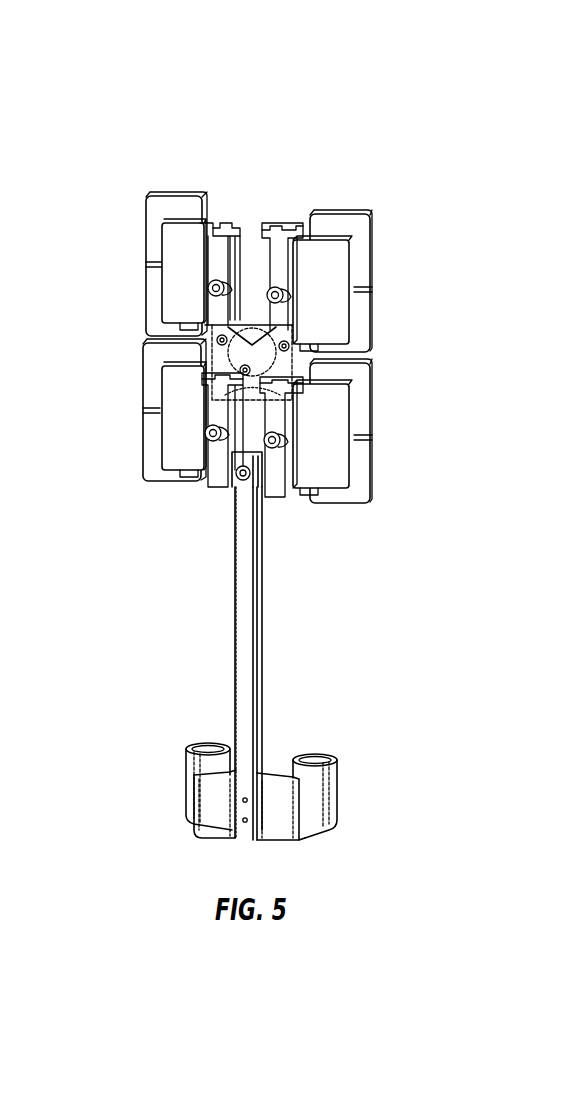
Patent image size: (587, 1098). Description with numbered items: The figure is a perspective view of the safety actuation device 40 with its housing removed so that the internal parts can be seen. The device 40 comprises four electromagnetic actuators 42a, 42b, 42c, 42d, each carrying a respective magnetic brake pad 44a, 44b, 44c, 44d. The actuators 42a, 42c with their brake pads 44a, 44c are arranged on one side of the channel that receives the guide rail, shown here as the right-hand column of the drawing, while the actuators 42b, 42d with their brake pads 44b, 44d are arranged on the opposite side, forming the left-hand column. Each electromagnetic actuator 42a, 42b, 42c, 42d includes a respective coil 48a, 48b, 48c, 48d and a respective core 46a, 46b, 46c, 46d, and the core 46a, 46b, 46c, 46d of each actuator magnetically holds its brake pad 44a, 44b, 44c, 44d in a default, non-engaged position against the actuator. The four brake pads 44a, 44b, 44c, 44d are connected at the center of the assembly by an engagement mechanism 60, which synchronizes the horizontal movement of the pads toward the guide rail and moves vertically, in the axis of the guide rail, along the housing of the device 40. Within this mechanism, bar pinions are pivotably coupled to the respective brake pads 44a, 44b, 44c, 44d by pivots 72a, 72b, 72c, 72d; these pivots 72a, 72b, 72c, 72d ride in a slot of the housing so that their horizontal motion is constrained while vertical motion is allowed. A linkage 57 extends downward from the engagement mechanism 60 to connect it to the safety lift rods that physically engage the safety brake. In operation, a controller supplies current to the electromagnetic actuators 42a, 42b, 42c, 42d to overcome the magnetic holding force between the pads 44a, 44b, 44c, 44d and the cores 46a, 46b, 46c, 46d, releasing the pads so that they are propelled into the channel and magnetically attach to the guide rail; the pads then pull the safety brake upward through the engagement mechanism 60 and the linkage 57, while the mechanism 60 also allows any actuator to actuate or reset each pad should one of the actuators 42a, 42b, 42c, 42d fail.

The safety actuation device 40 is at (236, 119).
The electromagnetic actuator 42a is at (300, 208).
The electromagnetic actuator 42b is at (126, 235).
The electromagnetic actuator 42c is at (388, 454).
The electromagnetic actuator 42d is at (127, 392).
The magnetic brake pad 44a is at (300, 320).
The magnetic brake pad 44b is at (210, 276).
The magnetic brake pad 44c is at (283, 458).
The magnetic brake pad 44d is at (207, 445).
The core 46a is at (327, 290).
The core 46b is at (177, 276).
The core 46c is at (322, 428).
The core 46d is at (172, 418).
The coil 48a is at (355, 235).
The coil 48b is at (153, 194).
The coil 48c is at (348, 498).
The coil 48d is at (172, 475).
The linkage 57 is at (243, 681).
The engagement mechanism 60 is at (264, 290).
The pivot 72a is at (329, 196).
The pivot 72b is at (222, 275).
The pivot 72c is at (272, 452).
The pivot 72d is at (213, 443).